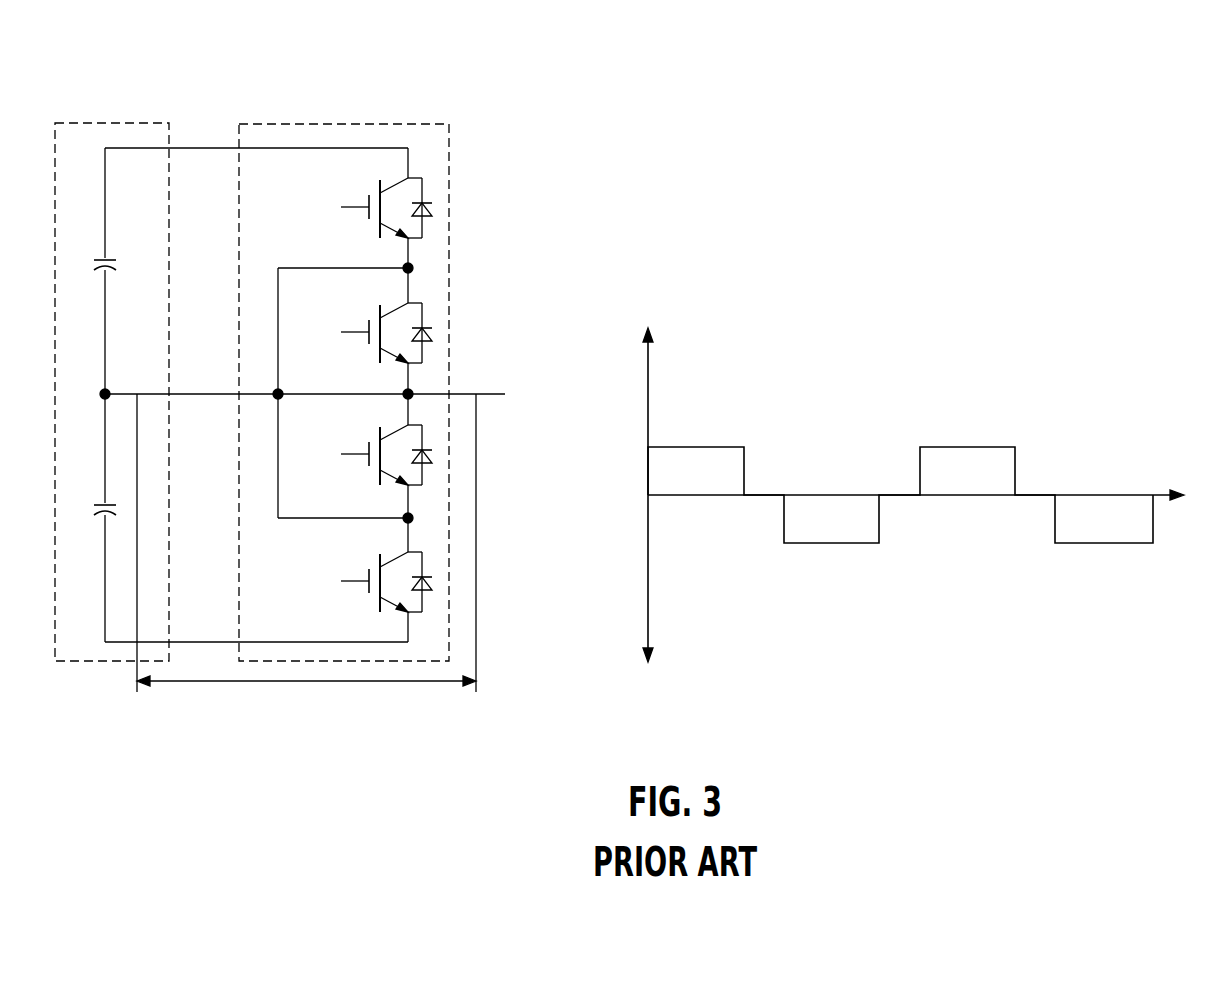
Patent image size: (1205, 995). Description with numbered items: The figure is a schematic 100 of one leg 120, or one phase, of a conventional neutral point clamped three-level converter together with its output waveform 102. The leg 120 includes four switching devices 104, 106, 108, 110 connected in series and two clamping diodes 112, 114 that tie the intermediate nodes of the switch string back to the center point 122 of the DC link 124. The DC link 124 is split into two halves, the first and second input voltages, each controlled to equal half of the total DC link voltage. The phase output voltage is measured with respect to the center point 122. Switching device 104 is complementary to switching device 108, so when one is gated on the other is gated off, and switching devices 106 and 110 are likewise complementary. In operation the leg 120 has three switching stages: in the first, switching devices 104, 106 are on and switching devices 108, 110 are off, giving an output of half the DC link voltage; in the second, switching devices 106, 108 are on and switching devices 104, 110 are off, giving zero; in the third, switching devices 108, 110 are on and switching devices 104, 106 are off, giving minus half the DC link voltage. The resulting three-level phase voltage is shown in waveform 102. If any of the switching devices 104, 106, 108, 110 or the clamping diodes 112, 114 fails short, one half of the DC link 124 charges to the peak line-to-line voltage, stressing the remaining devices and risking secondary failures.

The schematic 100 is at (510, 84).
The output waveform 102 is at (1060, 628).
The switching device 104 is at (379, 188).
The switching device 106 is at (379, 306).
The switching device 108 is at (379, 427).
The switching device 110 is at (379, 553).
The clamping diode 112 is at (327, 267).
The clamping diode 114 is at (333, 517).
The leg 120 is at (322, 123).
The center point 122 is at (108, 389).
The DC link 124 is at (112, 122).